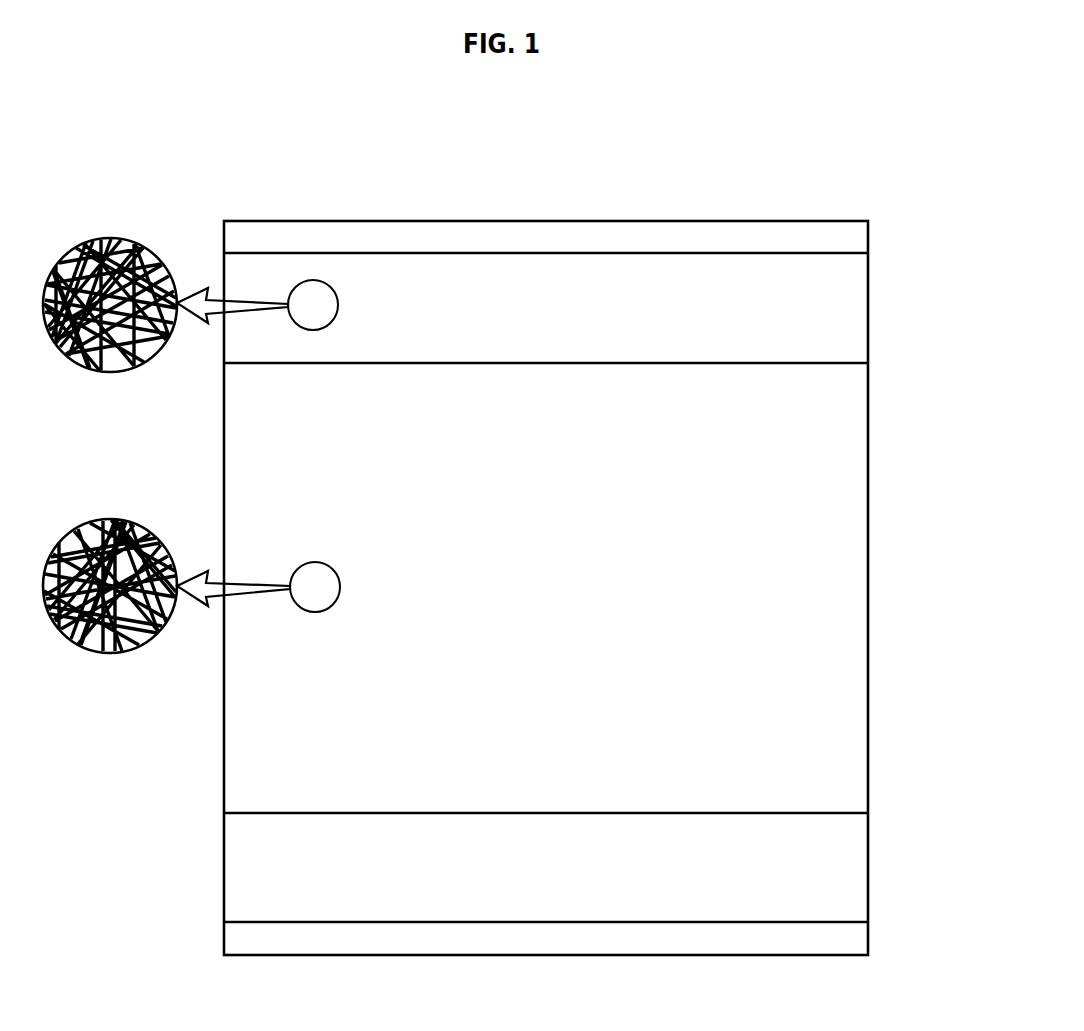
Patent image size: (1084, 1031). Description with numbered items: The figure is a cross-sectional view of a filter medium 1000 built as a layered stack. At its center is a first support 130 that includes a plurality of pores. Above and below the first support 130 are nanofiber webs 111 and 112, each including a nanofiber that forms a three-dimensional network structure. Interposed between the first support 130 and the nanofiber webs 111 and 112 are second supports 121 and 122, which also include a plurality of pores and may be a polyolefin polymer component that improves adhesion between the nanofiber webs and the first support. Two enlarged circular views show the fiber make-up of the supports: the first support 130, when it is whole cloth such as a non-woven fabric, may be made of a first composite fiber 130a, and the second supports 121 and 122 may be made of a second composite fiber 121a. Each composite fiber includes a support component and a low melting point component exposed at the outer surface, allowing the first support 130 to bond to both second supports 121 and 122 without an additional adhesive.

The filter medium 1000 is at (786, 193).
The nanofiber web 111 is at (852, 236).
The nanofiber web 112 is at (852, 938).
The second support 121 is at (852, 299).
The second composite fiber 121a is at (132, 369).
The second support 122 is at (852, 875).
The first support 130 is at (852, 589).
The first composite fiber 130a is at (132, 650).